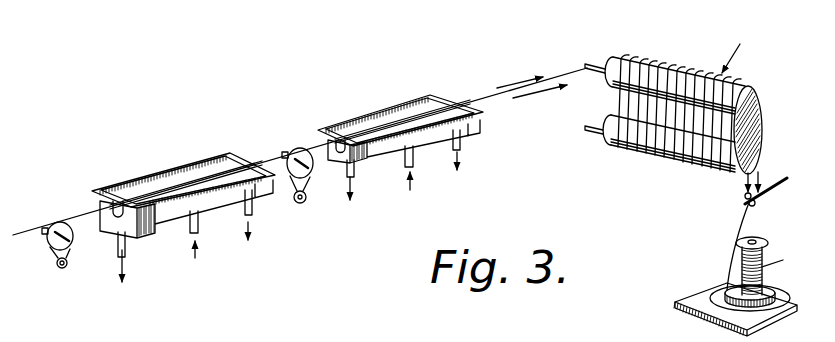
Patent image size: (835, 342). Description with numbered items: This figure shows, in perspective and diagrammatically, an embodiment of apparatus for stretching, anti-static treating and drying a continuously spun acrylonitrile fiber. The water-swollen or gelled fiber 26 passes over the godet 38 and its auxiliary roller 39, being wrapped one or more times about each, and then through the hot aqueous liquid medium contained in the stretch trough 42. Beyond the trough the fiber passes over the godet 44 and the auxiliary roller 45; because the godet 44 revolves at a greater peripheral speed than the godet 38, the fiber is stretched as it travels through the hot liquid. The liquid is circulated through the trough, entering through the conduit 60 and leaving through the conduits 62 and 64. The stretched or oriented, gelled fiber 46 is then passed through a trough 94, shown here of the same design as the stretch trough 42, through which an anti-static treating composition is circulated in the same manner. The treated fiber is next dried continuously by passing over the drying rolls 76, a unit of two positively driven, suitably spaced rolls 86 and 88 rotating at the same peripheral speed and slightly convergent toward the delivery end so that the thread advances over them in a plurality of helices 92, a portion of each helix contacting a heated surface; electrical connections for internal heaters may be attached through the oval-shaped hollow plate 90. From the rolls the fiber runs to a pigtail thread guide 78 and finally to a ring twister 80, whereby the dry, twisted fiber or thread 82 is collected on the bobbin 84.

The fiber 26 is at (23, 232).
The godet 38 is at (47, 250).
The auxiliary roller 39 is at (63, 268).
The stretch trough 42 is at (137, 172).
The godet 44 is at (297, 155).
The auxiliary roller 45 is at (301, 204).
The stretched gelled fiber 46 is at (313, 146).
The conduit 60 is at (200, 234).
The conduit 62 is at (128, 253).
The conduit 64 is at (252, 216).
The drying rolls 76 is at (674, 98).
The pigtail thread guide 78 is at (745, 200).
The ring twister 80 is at (700, 290).
The dry twisted fiber or thread 82 is at (743, 262).
The bobbin 84 is at (770, 216).
The drying roll 86 is at (610, 88).
The drying roll 88 is at (610, 152).
The oval-shaped hollow plate 90 is at (760, 133).
The helices 92 is at (618, 107).
The trough 94 is at (407, 80).